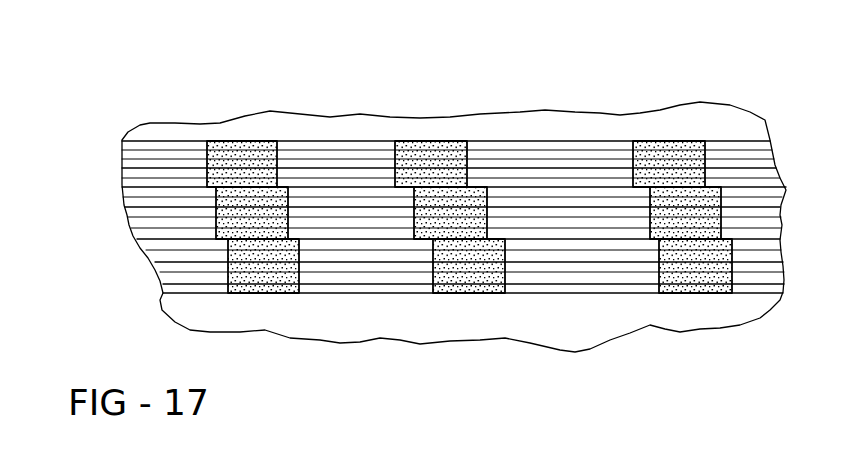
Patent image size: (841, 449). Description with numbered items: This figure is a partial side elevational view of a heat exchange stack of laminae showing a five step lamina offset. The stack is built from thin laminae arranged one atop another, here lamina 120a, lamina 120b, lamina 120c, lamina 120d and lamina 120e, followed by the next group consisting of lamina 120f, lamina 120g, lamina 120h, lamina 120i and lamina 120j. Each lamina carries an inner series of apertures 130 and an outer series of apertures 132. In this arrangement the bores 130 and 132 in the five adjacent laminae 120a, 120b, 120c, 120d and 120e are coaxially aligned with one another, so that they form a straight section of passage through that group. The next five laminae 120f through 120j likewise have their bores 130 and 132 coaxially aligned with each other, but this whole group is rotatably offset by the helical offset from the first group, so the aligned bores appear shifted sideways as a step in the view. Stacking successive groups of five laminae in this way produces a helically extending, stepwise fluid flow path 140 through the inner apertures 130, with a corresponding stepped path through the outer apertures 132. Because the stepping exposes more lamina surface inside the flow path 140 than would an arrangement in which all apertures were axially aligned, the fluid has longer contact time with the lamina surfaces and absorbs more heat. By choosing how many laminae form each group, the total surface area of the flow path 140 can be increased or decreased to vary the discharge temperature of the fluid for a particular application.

The lamina 120a is at (124, 143).
The lamina 120b is at (122, 150).
The lamina 120c is at (123, 158).
The lamina 120d is at (123, 175).
The lamina 120e is at (123, 183).
The lamina 120f is at (122, 193).
The lamina 120g is at (123, 203).
The lamina 120h is at (125, 213).
The lamina 120i is at (128, 223).
The lamina 120j is at (133, 235).
The inner series of apertures 130 is at (208, 168).
The outer series of apertures 132 is at (400, 158).
The fluid flow path 140 is at (250, 180).